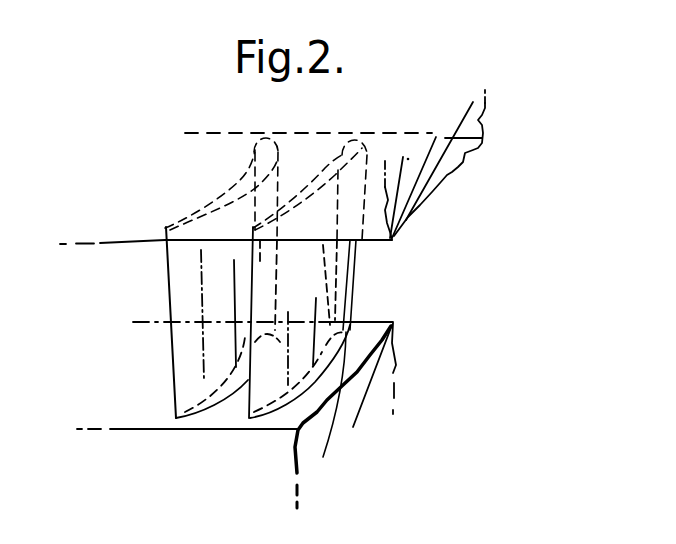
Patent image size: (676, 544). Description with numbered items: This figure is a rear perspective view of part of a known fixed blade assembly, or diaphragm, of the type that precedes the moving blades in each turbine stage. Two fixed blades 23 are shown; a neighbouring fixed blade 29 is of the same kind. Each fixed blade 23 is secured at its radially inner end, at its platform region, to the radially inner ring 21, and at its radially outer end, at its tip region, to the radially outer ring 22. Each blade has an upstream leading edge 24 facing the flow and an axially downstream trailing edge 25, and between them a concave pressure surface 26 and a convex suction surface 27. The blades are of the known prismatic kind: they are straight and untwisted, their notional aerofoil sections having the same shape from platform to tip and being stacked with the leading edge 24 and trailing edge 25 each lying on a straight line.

The radially inner ring 21 is at (350, 408).
The radially outer ring 22 is at (452, 172).
The fixed blade 23 is at (158, 230).
The leading edge 24 is at (365, 283).
The trailing edge 25 is at (167, 300).
The concave pressure surface 26 is at (236, 184).
The convex suction surface 27 is at (205, 210).
The fixed blade 29 is at (314, 160).